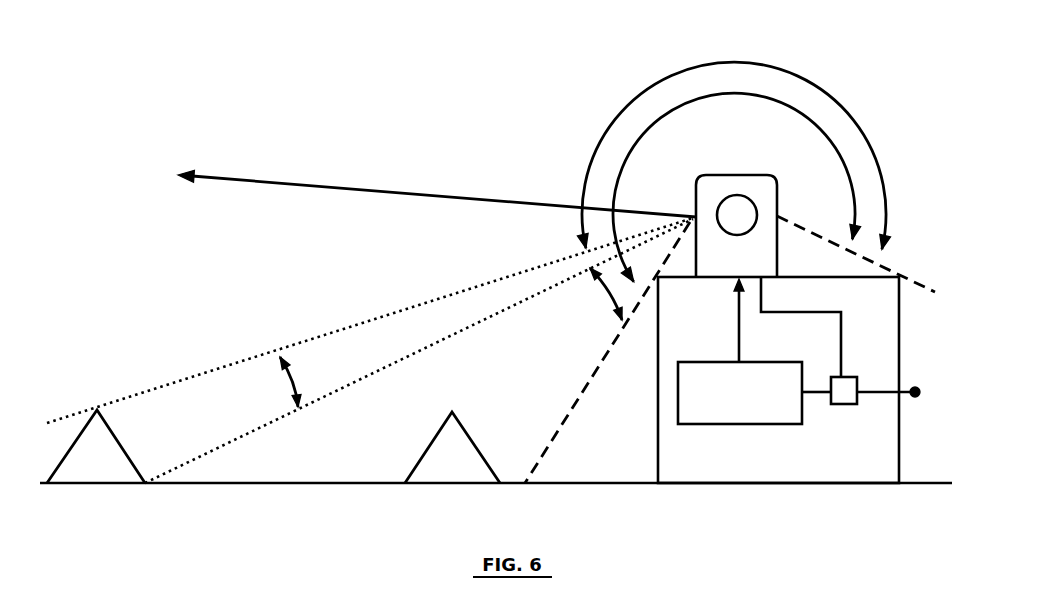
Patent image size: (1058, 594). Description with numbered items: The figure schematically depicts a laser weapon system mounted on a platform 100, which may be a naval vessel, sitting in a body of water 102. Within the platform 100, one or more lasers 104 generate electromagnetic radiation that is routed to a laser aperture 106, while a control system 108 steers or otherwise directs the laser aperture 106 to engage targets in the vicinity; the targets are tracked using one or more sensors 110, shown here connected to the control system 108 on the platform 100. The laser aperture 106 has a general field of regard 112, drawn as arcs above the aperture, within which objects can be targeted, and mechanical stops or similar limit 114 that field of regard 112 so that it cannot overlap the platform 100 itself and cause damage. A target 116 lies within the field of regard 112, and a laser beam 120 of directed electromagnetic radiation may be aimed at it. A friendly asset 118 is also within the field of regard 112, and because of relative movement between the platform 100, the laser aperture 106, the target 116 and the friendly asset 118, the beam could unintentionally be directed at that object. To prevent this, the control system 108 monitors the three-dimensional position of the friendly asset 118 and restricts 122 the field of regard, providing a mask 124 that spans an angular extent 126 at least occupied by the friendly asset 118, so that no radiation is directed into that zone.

The platform 100 is at (830, 489).
The body of water 102 is at (329, 519).
The laser 104 is at (787, 430).
The laser aperture 106 is at (720, 287).
The control system 108 is at (863, 408).
The sensor 110 is at (922, 380).
The field of regard 112 is at (830, 128).
The limit 114 is at (925, 280).
The target 116 is at (432, 455).
The friendly asset 118 is at (97, 475).
The laser beam 120 is at (247, 175).
The restriction 122 is at (570, 222).
The mask 124 is at (365, 313).
The angular extent 126 is at (277, 382).